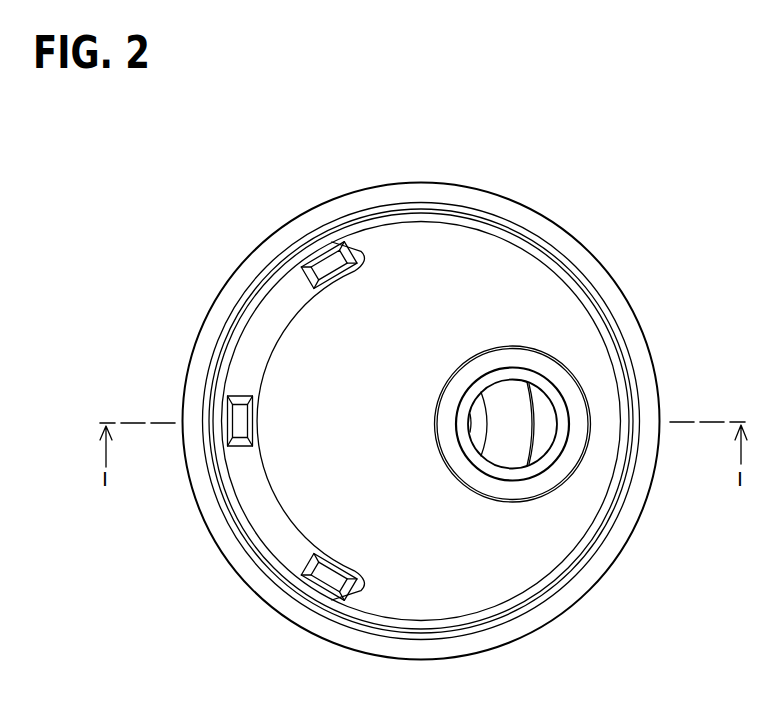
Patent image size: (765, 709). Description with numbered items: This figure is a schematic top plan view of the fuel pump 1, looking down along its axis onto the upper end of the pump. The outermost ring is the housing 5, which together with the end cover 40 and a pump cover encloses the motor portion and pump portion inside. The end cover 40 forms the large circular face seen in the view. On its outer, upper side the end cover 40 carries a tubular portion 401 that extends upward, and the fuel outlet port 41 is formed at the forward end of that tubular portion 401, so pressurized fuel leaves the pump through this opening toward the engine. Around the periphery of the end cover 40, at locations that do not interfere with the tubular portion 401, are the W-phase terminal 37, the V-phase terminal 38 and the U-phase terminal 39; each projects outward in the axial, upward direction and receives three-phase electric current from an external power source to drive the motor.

The fuel pump 1 is at (624, 190).
The housing 5 is at (553, 232).
The end cover 40 is at (548, 283).
The tubular portion 401 is at (538, 365).
The fuel outlet port 41 is at (515, 428).
The W-phase terminal 37 is at (318, 592).
The V-phase terminal 38 is at (238, 396).
The U-phase terminal 39 is at (324, 252).